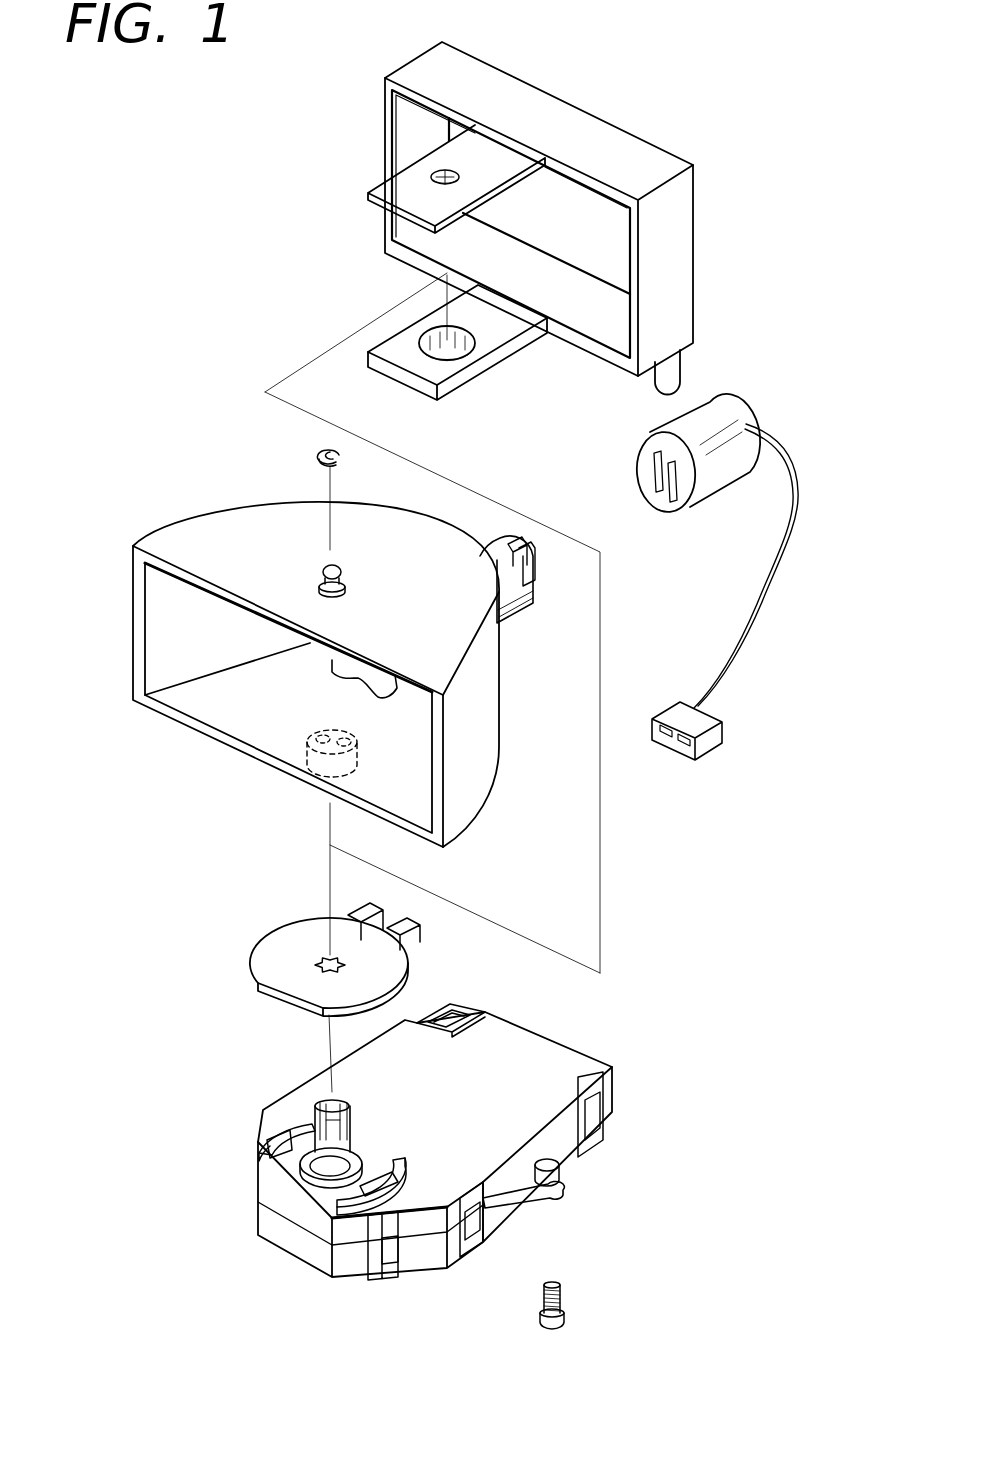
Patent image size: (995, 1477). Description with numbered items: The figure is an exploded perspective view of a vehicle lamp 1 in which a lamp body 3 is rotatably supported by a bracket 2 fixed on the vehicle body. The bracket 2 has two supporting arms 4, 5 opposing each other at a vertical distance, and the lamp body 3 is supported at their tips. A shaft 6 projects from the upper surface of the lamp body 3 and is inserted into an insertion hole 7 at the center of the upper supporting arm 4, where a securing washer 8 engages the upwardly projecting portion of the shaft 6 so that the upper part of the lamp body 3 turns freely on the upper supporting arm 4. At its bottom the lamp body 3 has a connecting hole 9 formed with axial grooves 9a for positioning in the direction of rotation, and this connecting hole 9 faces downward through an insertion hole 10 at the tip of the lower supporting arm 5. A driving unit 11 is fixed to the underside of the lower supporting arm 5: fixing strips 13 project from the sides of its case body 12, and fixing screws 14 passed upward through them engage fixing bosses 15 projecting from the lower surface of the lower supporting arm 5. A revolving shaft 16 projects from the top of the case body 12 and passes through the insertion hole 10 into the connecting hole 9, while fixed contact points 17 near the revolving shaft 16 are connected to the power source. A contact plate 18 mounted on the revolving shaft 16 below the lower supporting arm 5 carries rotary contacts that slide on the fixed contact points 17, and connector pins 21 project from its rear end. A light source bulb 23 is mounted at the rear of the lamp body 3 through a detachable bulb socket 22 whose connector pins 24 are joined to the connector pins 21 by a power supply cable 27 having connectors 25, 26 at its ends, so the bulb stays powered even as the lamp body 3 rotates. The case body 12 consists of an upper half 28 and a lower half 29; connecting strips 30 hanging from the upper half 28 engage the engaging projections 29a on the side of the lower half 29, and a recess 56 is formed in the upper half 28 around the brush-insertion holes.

The vehicle lamp 1 is at (205, 262).
The bracket 2 is at (610, 135).
The lamp body 3 is at (190, 540).
The upper supporting arm 4 is at (373, 187).
The lower supporting arm 5 is at (380, 333).
The shaft 6 is at (342, 570).
The insertion hole 7 is at (458, 178).
The securing washer 8 is at (307, 450).
The connecting hole 9 is at (312, 772).
The grooves 9a is at (310, 730).
The insertion hole 10 is at (458, 347).
The driving unit 11 is at (588, 1068).
The case body 12 is at (542, 1057).
The fixing strips 13 is at (558, 1197).
The fixing screws 14 is at (565, 1292).
The fixing bosses 15 is at (672, 372).
The revolving shaft 16 is at (345, 1152).
The fixed contact points 17 is at (263, 1118).
The contact plate 18 is at (250, 948).
The connector pins 21 is at (410, 918).
The bulb socket 22 is at (492, 543).
The light source bulb 23 is at (383, 687).
The connector pins 24 is at (527, 548).
The connector 25 is at (700, 730).
The connector 26 is at (712, 462).
The power supply cable 27 is at (785, 628).
The upper half 28 is at (502, 1037).
The lower half 29 is at (302, 1248).
The engaging projections 29a is at (393, 1248).
The connecting strips 30 is at (378, 1272).
The recess 56 is at (392, 1160).